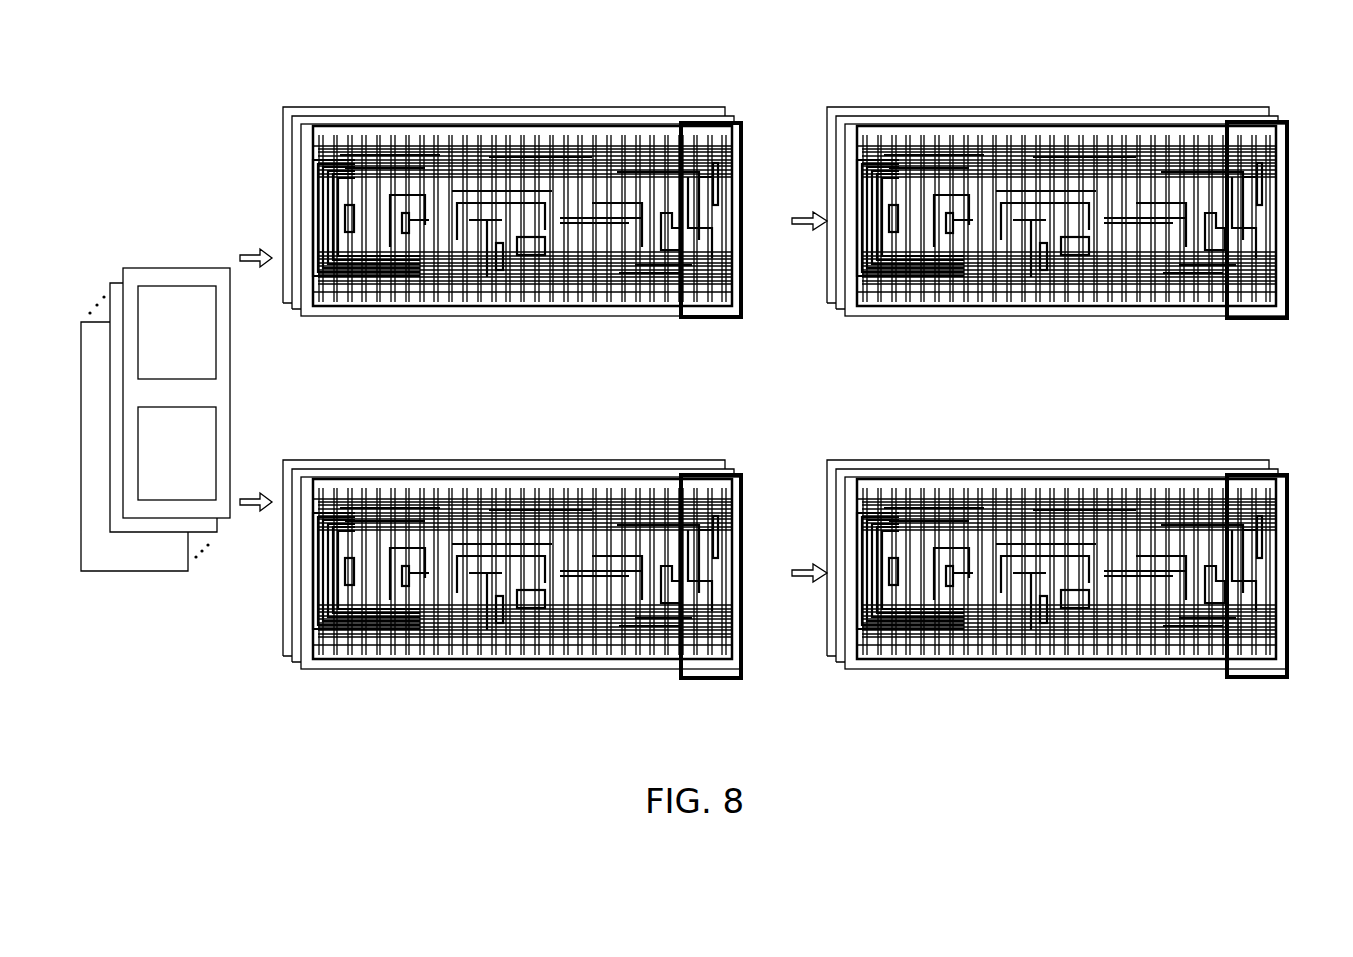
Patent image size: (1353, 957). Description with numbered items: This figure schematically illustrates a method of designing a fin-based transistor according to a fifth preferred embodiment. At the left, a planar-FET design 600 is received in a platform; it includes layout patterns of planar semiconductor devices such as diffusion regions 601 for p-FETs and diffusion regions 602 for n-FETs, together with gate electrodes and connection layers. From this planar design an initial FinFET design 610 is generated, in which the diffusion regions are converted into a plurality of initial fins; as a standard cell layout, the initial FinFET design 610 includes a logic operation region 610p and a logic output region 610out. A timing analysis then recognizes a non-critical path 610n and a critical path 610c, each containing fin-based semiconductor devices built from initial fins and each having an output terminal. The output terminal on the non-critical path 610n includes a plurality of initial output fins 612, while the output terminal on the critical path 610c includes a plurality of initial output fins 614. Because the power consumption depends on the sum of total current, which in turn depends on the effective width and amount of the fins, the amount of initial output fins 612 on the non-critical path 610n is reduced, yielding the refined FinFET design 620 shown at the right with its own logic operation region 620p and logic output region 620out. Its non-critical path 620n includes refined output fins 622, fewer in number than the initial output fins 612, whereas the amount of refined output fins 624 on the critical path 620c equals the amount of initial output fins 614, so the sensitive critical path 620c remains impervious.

The circuit layout design database 600 is at (218, 234).
The diffusion regions for p-FETs 601 is at (198, 347).
The diffusion regions for n-FETs 602 is at (198, 468).
The initial FinFET design 610 is at (707, 57).
The non-critical path 610n is at (750, 103).
The critical path 610c is at (752, 455).
The logic operation region 610p is at (680, 322).
The logic output region 610out is at (743, 322).
The initial output fins 612 is at (728, 290).
The initial output fins 614 is at (728, 644).
The refined FinFET design 620 is at (1215, 57).
The non-critical path 620n is at (1258, 100).
The critical path 620c is at (1259, 452).
The logic operation region 620p is at (1224, 322).
The logic output region 620out is at (1287, 322).
The refined output fins 622 is at (1274, 288).
The refined output fins 624 is at (1274, 644).